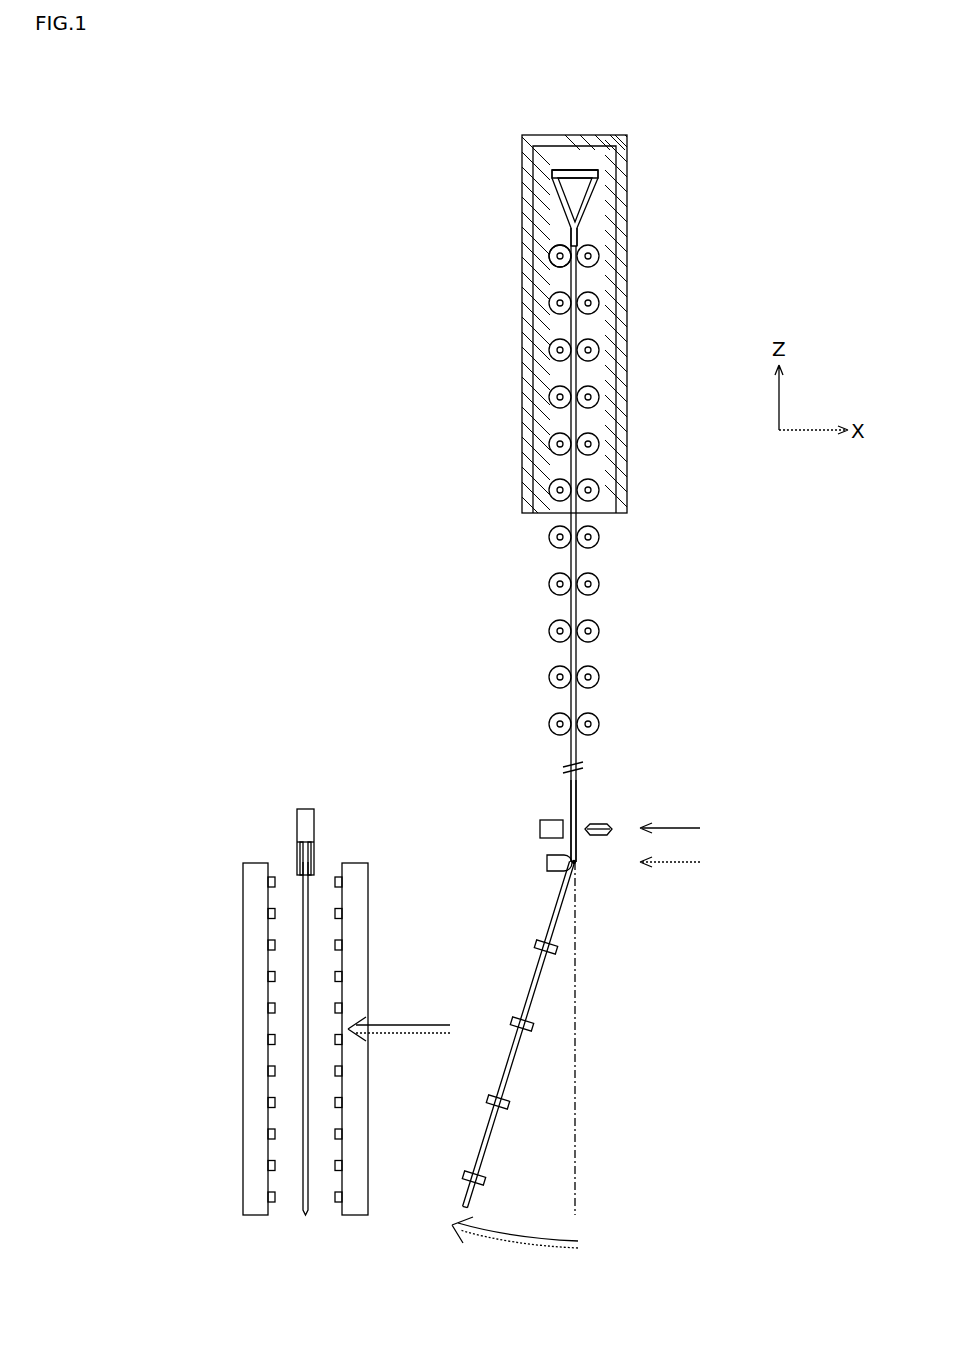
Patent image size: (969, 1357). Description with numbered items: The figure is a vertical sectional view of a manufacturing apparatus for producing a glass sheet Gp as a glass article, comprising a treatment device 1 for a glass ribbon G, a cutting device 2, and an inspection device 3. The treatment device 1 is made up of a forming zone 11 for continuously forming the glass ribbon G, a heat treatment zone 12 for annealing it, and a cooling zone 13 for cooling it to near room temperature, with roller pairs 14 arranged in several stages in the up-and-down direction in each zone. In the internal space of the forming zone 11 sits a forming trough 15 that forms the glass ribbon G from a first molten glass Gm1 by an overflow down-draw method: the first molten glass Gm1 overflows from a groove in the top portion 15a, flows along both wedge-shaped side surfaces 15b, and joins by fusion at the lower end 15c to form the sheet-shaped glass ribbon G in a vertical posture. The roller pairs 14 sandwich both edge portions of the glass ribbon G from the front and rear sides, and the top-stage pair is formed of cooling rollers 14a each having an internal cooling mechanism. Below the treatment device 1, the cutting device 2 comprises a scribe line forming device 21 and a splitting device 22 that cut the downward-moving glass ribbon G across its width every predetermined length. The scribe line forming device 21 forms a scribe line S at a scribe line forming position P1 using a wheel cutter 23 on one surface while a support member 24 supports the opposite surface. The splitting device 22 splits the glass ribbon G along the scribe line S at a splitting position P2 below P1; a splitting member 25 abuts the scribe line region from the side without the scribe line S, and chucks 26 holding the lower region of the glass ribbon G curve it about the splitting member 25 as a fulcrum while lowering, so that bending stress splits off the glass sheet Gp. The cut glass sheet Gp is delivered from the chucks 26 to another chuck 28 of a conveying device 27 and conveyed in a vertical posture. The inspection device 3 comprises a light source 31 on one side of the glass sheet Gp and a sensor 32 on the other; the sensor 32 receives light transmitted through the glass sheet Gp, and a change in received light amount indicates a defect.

The treatment device 1 is at (613, 131).
The forming zone 11 is at (640, 135).
The heat treatment zone 12 is at (640, 245).
The cooling zone 13 is at (640, 520).
The roller pairs 14 is at (549, 351).
The cooling rollers 14a is at (556, 265).
The forming trough 15 is at (520, 194).
The top portion of forming trough 15a is at (568, 174).
The side surfaces of forming trough 15b is at (562, 207).
The lower end of forming trough 15c is at (520, 237).
The glass ribbon G is at (571, 470).
The first molten glass Gm1 is at (582, 172).
The cutting device 2 is at (613, 924).
The scribe line forming device 21 is at (586, 818).
The splitting device 22 is at (462, 973).
The wheel cutter 23 is at (605, 826).
The support member 24 is at (540, 830).
The splitting member 25 is at (547, 862).
The chuck 26 is at (540, 946).
The scribe line S is at (578, 862).
The scribe line forming position P1 is at (684, 828).
The splitting position P2 is at (684, 862).
The inspection device 3 is at (301, 1029).
The conveying device 27 is at (320, 998).
The chuck of conveying device 28 is at (308, 826).
The light source 31 is at (354, 1203).
The sensor 32 is at (256, 1203).
The glass sheet Gp is at (305, 1215).